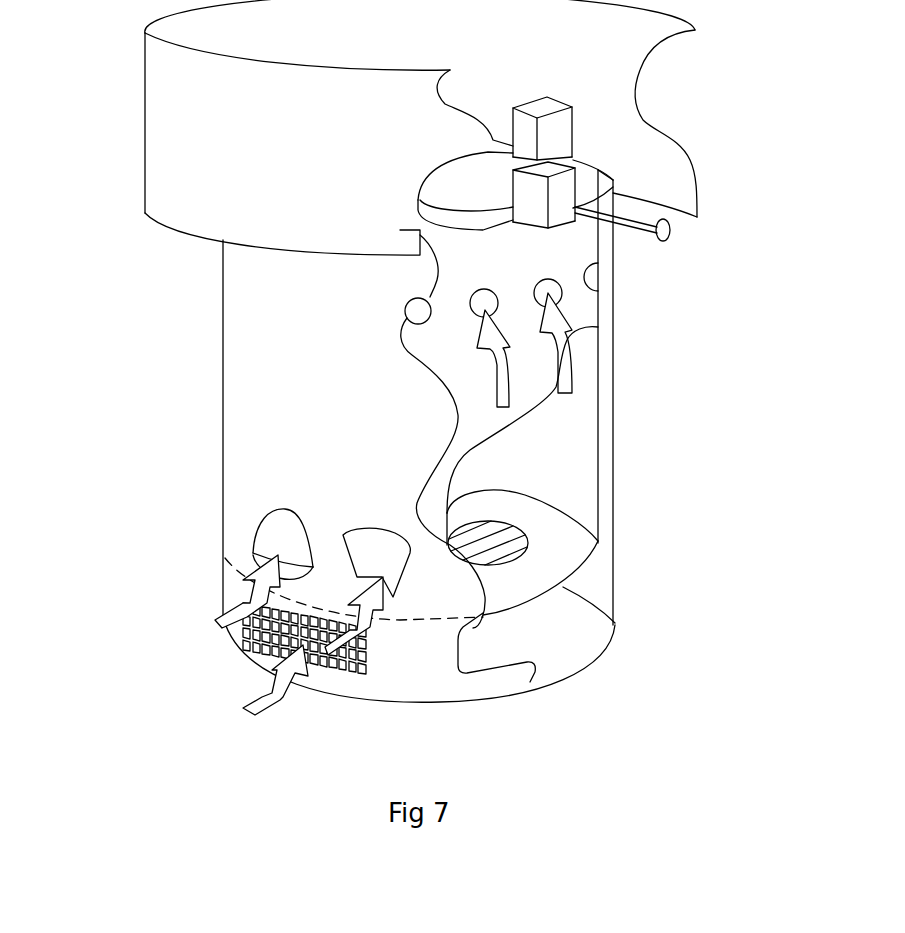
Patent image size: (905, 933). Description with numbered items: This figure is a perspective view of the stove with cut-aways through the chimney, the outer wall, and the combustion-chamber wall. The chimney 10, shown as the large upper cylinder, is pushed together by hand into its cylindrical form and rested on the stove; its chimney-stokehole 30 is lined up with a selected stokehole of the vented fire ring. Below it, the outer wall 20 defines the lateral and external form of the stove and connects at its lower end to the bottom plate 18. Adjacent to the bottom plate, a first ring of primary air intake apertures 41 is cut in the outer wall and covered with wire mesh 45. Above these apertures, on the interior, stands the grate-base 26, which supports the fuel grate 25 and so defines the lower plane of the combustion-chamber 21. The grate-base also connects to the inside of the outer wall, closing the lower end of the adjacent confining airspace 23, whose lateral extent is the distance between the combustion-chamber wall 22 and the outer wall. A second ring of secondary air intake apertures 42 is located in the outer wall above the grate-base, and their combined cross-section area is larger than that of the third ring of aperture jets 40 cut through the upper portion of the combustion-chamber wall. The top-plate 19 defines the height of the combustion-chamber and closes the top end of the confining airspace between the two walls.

The chimney 10 is at (145, 162).
The chimney-stokehole 30 is at (403, 203).
The outer wall 20 is at (223, 332).
The combustion-chamber wall 22 is at (592, 308).
The top-plate 19 is at (613, 180).
The aperture jets 40 is at (488, 283).
The adjacent confining airspace 23 is at (468, 432).
The combustion-chamber 21 is at (565, 447).
The fuel grate 25 is at (513, 530).
The grate-base 26 is at (545, 567).
The bottom plate 18 is at (545, 632).
The secondary air intake apertures 42 is at (268, 540).
The primary air intake apertures 41 is at (288, 640).
The wire mesh 45 is at (250, 640).